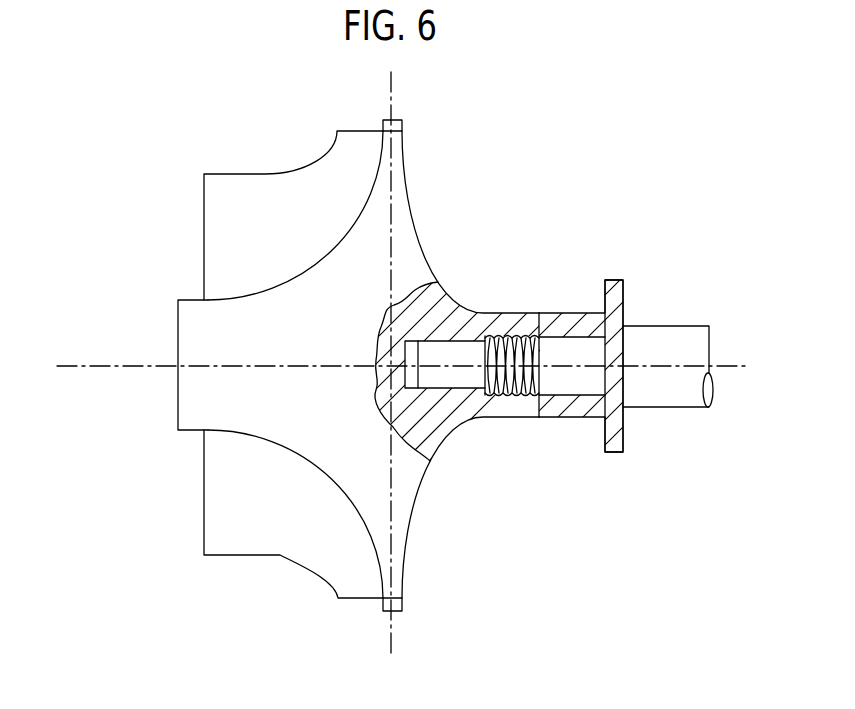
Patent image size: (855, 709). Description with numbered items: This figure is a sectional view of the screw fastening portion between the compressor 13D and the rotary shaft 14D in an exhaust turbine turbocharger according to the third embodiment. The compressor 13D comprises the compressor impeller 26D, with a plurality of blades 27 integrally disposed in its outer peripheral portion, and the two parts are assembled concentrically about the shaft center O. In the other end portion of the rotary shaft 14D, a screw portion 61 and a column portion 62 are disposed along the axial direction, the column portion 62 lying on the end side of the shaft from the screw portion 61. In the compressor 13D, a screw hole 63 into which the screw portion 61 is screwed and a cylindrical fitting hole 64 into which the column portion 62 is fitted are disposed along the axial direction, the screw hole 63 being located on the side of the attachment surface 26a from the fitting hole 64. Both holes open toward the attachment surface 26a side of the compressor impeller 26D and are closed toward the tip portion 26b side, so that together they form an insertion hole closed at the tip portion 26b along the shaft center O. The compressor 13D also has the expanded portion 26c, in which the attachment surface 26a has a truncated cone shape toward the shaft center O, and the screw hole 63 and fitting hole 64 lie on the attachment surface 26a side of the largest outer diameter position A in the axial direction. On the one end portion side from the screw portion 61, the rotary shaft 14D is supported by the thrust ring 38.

The compressor 13D is at (343, 373).
The compressor impeller 26D is at (353, 373).
The attachment surface 26a is at (410, 205).
The tip portion 26b is at (177, 407).
The expanded portion 26c is at (460, 424).
The blades 27 is at (273, 202).
The thrust ring 38 is at (611, 280).
The rotary shaft 14D is at (572, 338).
The screw portion 61 is at (554, 378).
The column portion 62 is at (441, 352).
The screw hole 63 is at (513, 385).
The fitting hole 64 is at (440, 380).
The largest outer diameter position A is at (393, 85).
The shaft center O is at (88, 369).